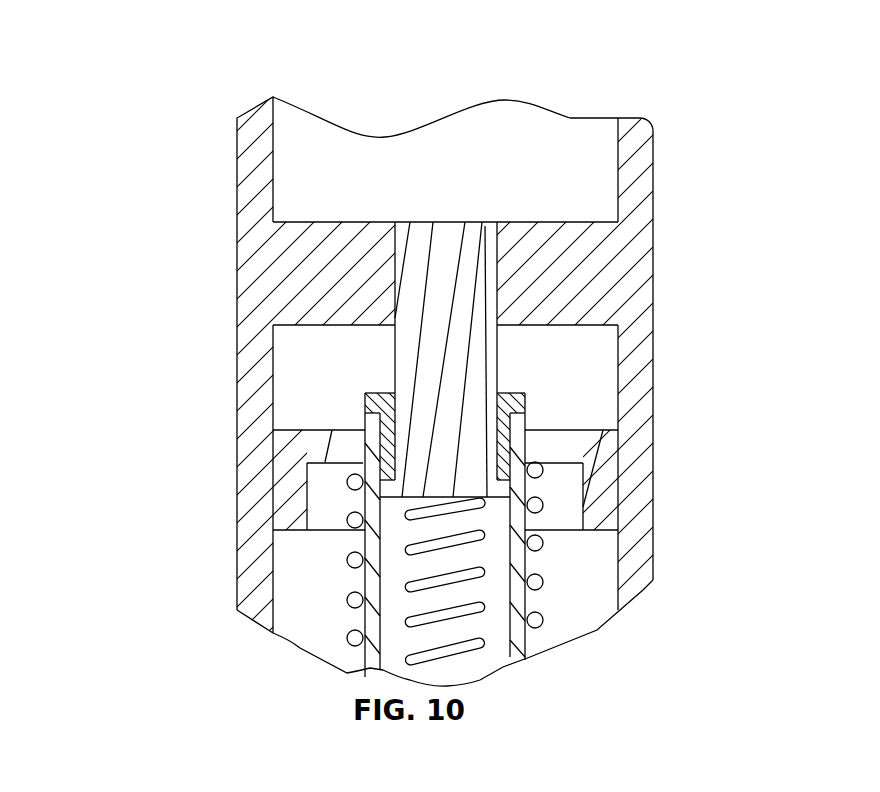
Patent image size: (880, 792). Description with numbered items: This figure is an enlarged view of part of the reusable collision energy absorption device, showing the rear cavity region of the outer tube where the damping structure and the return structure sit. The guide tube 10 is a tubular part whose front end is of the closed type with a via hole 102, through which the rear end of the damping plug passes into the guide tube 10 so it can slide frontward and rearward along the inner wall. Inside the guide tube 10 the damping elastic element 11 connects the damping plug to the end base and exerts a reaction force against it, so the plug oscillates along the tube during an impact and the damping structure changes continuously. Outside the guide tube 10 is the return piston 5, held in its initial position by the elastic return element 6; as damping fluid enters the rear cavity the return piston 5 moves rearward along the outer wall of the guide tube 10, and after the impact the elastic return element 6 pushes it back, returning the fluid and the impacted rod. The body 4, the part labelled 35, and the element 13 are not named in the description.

The valve body 4 is at (440, 396).
The upper chamber 35 is at (395, 119).
The valve pin 13 is at (462, 277).
The guide tube 10 is at (530, 403).
The via hole 102 is at (497, 397).
The return piston 5 is at (608, 505).
The elastic return element 6 is at (298, 448).
The damping elastic element 11 is at (281, 543).